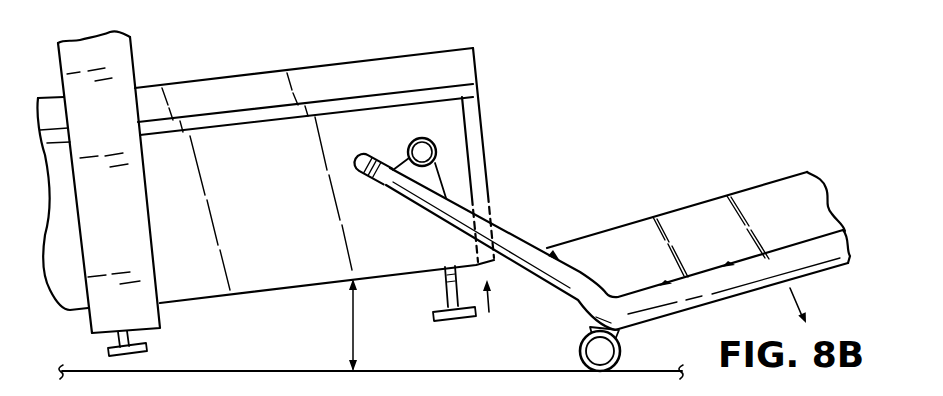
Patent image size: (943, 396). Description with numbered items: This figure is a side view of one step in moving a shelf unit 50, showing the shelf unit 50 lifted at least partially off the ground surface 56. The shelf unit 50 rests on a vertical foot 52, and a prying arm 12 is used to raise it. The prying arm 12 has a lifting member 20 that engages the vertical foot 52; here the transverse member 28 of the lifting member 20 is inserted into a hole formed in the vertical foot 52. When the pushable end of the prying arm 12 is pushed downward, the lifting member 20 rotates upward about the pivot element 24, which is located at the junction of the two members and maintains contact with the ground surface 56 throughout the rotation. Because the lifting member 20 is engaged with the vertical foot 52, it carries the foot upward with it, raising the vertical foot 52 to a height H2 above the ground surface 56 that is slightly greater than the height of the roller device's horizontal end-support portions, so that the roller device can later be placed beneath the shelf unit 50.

The prying arm 12 is at (723, 165).
The lifting member 20 is at (540, 238).
The pivot element 24 is at (582, 357).
The transverse member 28 is at (437, 151).
The shelf unit 50 is at (198, 77).
The vertical foot 52 is at (261, 217).
The ground surface 56 is at (284, 371).
The height H2 is at (358, 356).